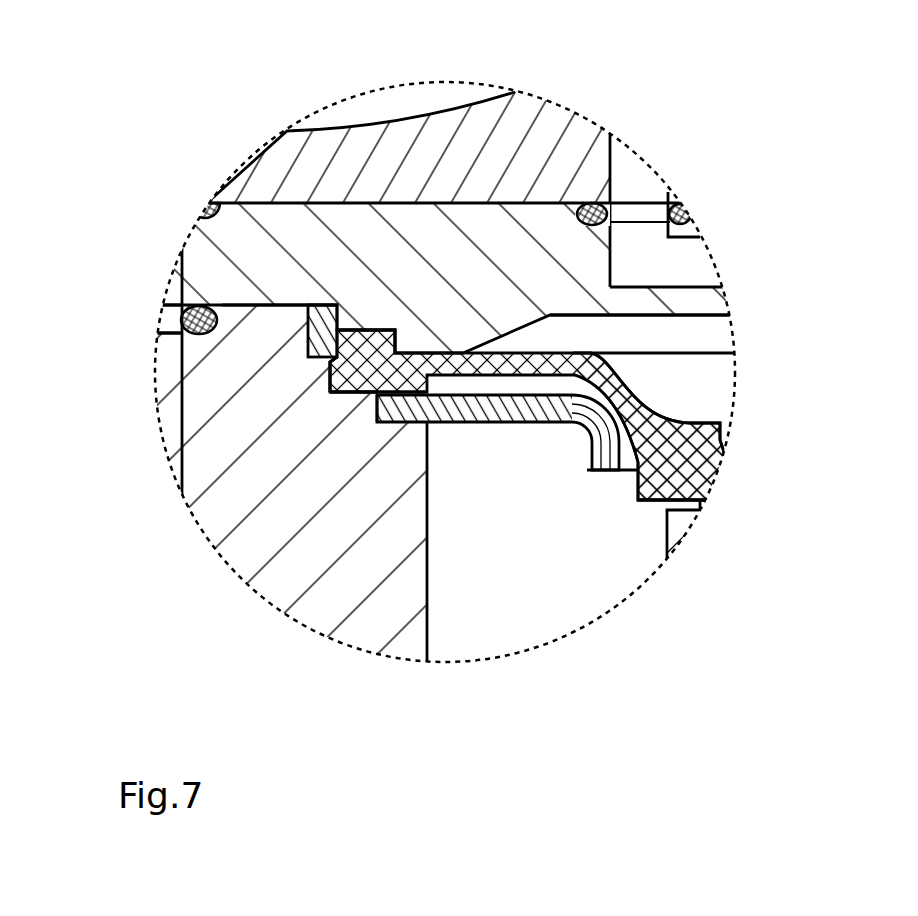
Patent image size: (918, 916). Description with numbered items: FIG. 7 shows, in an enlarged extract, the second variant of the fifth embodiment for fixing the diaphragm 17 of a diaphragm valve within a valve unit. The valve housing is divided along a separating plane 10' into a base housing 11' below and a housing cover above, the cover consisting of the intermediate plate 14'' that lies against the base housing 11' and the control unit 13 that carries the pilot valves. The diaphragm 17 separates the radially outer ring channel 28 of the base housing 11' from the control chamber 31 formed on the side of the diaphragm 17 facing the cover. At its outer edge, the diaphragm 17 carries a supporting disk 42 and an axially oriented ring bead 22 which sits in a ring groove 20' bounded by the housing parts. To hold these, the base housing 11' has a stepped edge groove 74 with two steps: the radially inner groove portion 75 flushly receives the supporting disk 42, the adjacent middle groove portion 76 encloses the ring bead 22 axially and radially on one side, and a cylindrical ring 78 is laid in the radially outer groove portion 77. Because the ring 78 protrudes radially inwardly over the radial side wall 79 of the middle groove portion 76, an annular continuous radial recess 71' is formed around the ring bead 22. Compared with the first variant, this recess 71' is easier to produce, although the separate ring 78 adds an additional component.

The control unit 13 is at (527, 157).
The intermediate plate 14'' is at (442, 278).
The ring bead 22 is at (380, 326).
The ring groove 20' is at (437, 185).
The cylindrical ring 78 is at (305, 304).
The separating plane 10' is at (136, 315).
The radially outer groove portion 77 is at (290, 335).
The middle groove portion 76 is at (310, 374).
The radial side wall 79 is at (330, 385).
The annular continuous radial recess 71' is at (213, 451).
The edge groove 74 is at (321, 413).
The radially inner groove portion 75 is at (372, 437).
The base housing 11' is at (412, 512).
The ring channel 28 is at (511, 551).
The supporting disk 42 is at (525, 408).
The diaphragm 17 is at (677, 465).
The control chamber 31 is at (690, 373).